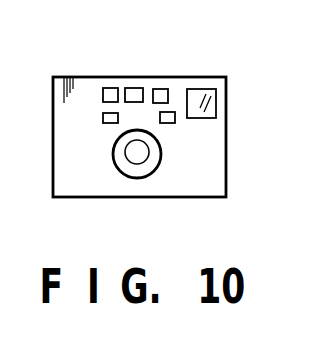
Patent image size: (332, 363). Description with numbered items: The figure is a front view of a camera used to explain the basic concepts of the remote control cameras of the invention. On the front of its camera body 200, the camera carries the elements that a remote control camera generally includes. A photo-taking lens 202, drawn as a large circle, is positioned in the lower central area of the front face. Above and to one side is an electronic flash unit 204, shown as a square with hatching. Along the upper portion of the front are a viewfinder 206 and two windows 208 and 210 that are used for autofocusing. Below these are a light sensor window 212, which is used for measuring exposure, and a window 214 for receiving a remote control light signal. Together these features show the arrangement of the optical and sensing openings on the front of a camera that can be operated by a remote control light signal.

The camera body 200 is at (222, 162).
The photo-taking lens 202 is at (132, 160).
The electronic flash unit 204 is at (220, 102).
The viewfinder 206 is at (138, 86).
The window for autofocusing 208 is at (110, 88).
The window for autofocusing 210 is at (160, 88).
The light sensor window 212 is at (106, 124).
The window for receiving a remote control light signal 214 is at (169, 124).